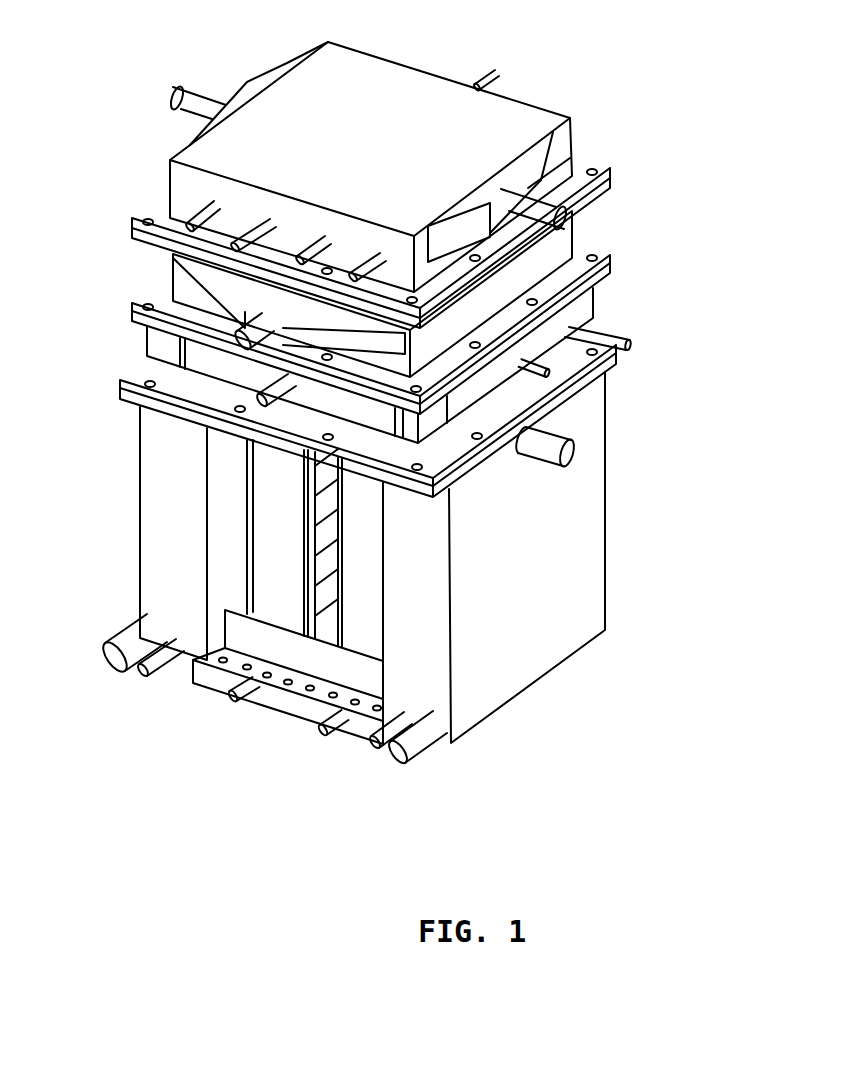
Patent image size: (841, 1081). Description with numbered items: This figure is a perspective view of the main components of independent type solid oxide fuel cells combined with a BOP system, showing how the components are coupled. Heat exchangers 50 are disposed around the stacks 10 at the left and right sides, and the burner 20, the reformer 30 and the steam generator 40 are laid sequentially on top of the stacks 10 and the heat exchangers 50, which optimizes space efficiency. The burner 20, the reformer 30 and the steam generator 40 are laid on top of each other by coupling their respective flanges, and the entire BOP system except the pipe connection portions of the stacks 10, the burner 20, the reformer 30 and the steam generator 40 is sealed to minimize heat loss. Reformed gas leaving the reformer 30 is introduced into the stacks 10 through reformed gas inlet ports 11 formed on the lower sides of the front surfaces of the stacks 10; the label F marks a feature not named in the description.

The steam generator 40 is at (585, 134).
The reformer 30 is at (592, 231).
The burner 20 is at (621, 308).
The flow path F is at (487, 268).
The heat exchangers 50 is at (130, 510).
The stacks 10 is at (357, 600).
The reformed gas inlet ports 11 is at (318, 728).